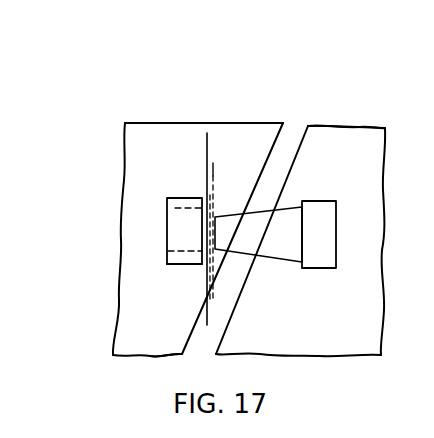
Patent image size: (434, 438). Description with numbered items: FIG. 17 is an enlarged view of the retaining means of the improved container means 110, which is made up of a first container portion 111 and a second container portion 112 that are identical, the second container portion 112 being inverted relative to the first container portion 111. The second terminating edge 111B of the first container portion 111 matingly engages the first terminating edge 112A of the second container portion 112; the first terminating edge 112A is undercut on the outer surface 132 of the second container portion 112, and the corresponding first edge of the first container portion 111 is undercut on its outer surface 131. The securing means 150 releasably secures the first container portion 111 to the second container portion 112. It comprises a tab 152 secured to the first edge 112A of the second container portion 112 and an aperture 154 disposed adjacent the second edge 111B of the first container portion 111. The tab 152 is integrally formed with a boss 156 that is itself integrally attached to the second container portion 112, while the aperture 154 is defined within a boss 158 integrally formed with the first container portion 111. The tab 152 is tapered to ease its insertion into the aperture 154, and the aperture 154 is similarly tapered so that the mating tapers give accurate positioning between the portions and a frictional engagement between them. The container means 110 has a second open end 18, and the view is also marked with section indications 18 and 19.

The container means 110 is at (375, 116).
The first container portion 111 is at (138, 208).
The second terminating edge 111B is at (188, 346).
The second container portion 112 is at (367, 263).
The first terminating edge 112A is at (289, 161).
The outer surface 131 is at (128, 273).
The outer surface 132 is at (362, 323).
The securing means 150 is at (293, 112).
The tab 152 is at (288, 250).
The aperture 154 is at (176, 208).
The boss 156 is at (323, 223).
The boss 158 is at (190, 264).
The second open end 18 is at (207, 133).
The section line 19- 19 is at (213, 163).